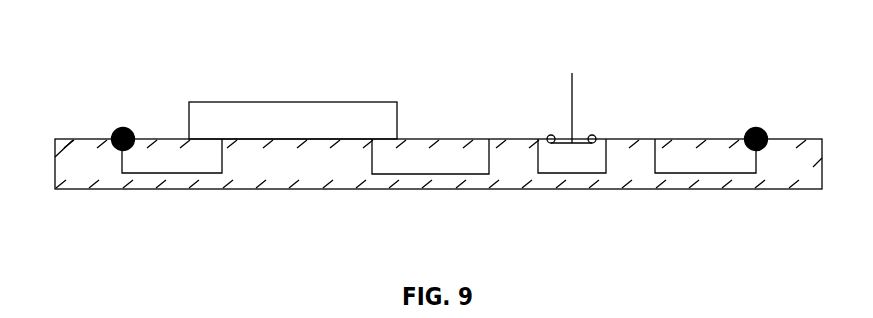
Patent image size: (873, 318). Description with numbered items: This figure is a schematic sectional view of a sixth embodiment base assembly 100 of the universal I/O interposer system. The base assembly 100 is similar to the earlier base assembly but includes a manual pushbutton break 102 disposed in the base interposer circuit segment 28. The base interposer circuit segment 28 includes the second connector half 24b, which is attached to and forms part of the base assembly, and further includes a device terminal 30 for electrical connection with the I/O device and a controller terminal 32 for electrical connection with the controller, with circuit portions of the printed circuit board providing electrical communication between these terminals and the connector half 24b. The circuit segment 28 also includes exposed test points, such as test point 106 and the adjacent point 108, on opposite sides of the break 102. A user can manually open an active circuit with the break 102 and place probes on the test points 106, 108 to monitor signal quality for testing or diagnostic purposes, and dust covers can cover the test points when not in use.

The base assembly 100 is at (789, 130).
The base interposer circuit segment 28 is at (442, 186).
The cavity 108 is at (517, 138).
The test point 106 is at (630, 139).
The second connector half 24b is at (373, 101).
The manual pushbutton break 102 is at (573, 98).
The device terminal 30 is at (123, 113).
The controller terminal 32 is at (750, 128).